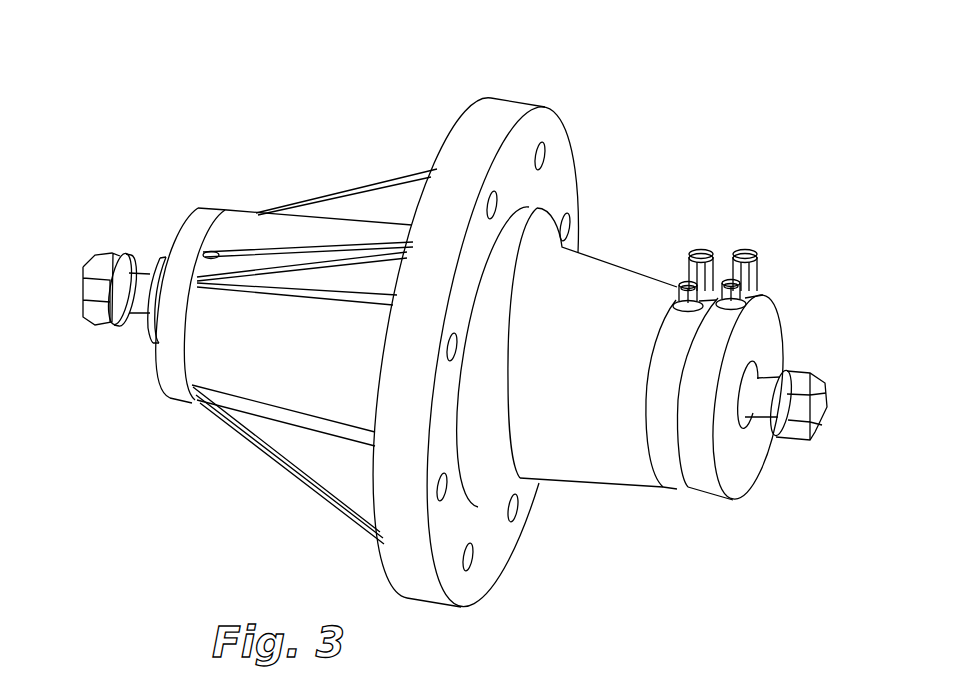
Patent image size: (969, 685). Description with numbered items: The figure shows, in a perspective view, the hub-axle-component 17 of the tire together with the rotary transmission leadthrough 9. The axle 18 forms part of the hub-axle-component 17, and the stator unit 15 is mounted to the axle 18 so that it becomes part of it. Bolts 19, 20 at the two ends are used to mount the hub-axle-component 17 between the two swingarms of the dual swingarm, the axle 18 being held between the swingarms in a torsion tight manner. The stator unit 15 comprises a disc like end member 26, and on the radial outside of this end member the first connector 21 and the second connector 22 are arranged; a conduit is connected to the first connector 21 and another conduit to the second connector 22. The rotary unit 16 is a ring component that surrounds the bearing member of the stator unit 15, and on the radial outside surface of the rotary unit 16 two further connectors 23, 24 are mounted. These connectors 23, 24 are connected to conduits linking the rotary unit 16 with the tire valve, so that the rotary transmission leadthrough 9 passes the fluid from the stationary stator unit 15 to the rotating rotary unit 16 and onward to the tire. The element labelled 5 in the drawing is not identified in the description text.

The hub 5 is at (588, 277).
The rotary transmission leadthrough 9 is at (728, 390).
The stator unit 15 is at (700, 503).
The rotary unit 16 is at (657, 492).
The hub-axle-component 17 is at (332, 147).
The axle 18 is at (165, 259).
The bolt 19 is at (815, 416).
The bolt 20 is at (103, 253).
The first connector 21 is at (746, 250).
The second connector 22 is at (743, 297).
The connector 23 is at (691, 248).
The connector 24 is at (680, 306).
The disc like end member 26 is at (763, 325).